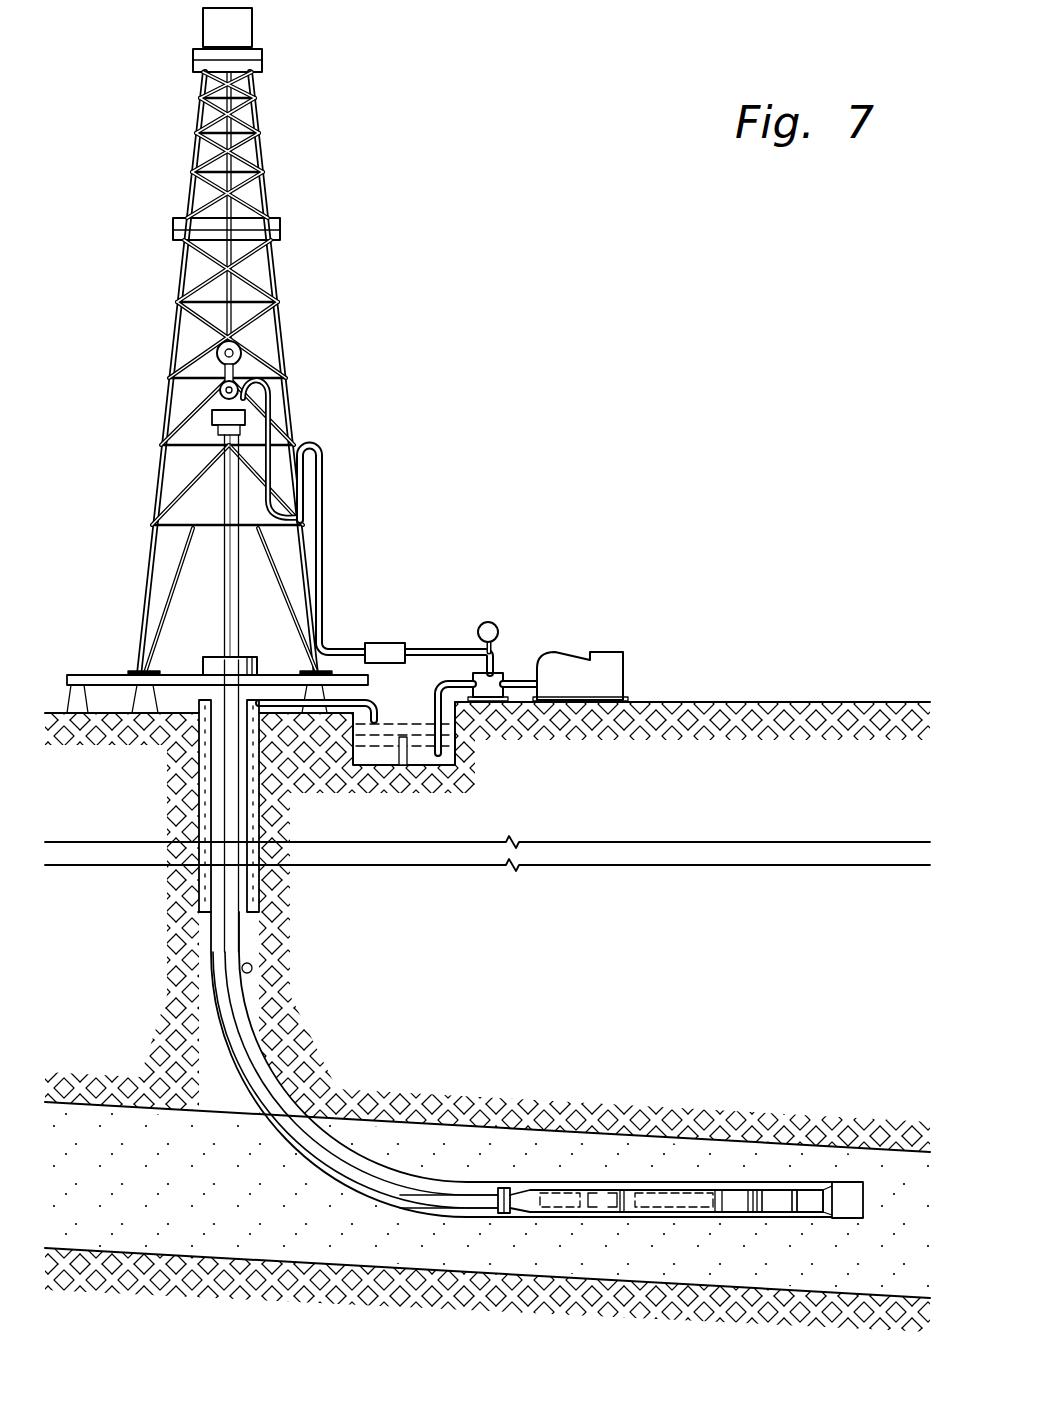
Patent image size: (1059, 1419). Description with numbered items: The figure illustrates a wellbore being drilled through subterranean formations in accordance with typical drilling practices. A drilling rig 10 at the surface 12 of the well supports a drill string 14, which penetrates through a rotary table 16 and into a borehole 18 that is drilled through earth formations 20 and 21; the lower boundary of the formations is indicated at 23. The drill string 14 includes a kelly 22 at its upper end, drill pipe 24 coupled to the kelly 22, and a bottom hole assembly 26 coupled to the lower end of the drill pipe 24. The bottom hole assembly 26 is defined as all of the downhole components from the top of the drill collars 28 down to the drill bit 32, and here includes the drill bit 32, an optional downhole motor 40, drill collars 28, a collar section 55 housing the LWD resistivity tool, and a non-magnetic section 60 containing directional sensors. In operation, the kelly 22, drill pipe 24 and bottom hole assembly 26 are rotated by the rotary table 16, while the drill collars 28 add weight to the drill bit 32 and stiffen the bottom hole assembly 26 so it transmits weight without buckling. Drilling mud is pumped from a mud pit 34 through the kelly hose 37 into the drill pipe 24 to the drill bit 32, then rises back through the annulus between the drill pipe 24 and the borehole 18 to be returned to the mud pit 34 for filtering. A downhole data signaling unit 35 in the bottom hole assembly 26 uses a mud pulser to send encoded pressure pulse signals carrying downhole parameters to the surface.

The drilling rig 10 is at (378, 376).
The surface 12 is at (690, 702).
The drill string 14 is at (268, 1058).
The rotary table 16 is at (256, 656).
The borehole 18 is at (255, 963).
The earth formation 20 is at (607, 957).
The earth formation 21 is at (182, 1193).
The kelly 22 is at (232, 597).
The lower formation boundary 23 is at (908, 1155).
The drill pipe 24 is at (358, 1163).
The bottom hole assembly 26 is at (695, 1212).
The drill collars 28 is at (500, 1186).
The drill bit 32 is at (883, 1218).
The mud pit 34 is at (379, 750).
The downhole data signaling unit 35 is at (607, 1188).
The kelly hose 37 is at (430, 648).
The downhole motor 40 is at (810, 1200).
The LWD tool collar section 55 is at (665, 1188).
The non-magnetic section 60 is at (560, 1188).